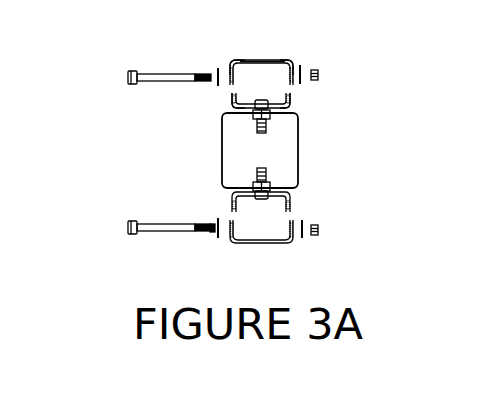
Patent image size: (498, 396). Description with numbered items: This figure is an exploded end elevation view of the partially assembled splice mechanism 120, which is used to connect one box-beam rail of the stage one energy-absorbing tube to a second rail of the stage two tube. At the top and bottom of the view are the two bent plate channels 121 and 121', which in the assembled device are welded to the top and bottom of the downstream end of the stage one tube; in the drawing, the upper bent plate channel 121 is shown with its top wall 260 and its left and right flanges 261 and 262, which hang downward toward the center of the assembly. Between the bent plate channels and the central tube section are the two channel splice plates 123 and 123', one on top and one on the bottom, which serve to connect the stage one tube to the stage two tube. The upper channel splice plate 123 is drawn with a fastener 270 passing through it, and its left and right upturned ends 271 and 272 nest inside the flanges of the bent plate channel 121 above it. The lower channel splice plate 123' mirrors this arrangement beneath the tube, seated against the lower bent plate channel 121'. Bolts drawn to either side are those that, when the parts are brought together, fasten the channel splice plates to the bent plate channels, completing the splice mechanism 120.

The splice mechanism 120 is at (176, 149).
The bent plate channel 121 is at (276, 50).
The bent plate channel 121' is at (280, 249).
The channel splice plate 123 is at (304, 108).
The channel splice plate 123' is at (306, 197).
The top wall of bracket 260 is at (251, 42).
The left flange of bracket 261 is at (216, 56).
The right flange of bracket 262 is at (293, 57).
The fastener 270 is at (247, 107).
The left end of clamp plate 271 is at (232, 100).
The right end of clamp plate 272 is at (293, 97).